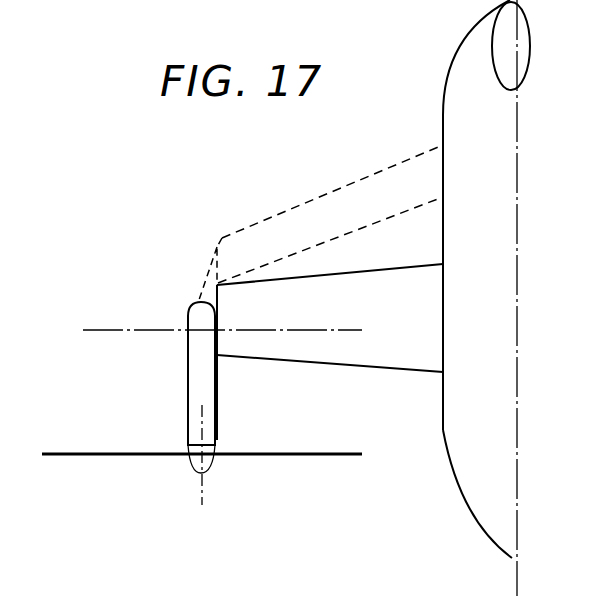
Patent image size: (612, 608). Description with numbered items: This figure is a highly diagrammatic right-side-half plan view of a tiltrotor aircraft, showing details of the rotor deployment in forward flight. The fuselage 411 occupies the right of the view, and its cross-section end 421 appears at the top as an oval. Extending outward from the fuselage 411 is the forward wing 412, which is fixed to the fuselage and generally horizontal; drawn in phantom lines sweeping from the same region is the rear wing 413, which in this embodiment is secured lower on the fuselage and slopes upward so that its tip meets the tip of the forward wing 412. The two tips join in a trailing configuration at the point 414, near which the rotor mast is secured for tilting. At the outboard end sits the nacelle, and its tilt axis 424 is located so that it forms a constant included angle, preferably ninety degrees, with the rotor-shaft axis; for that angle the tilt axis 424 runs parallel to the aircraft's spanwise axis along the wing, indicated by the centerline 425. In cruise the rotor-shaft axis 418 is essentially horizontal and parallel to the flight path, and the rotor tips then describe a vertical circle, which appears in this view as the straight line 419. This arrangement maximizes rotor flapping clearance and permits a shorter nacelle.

The fuselage 411 is at (502, 440).
The fuselage cross-section end 421 is at (530, 45).
The forward wing 412 is at (388, 368).
The rear wing 413 is at (336, 186).
The wing-tip connection point 414 is at (203, 276).
The nacelle tilt axis 424 is at (190, 405).
The pod axis / centerline 425 is at (170, 333).
The vertical circle of rotor tips 419 is at (150, 458).
The rotor-shaft axis in cruise 418 is at (208, 493).